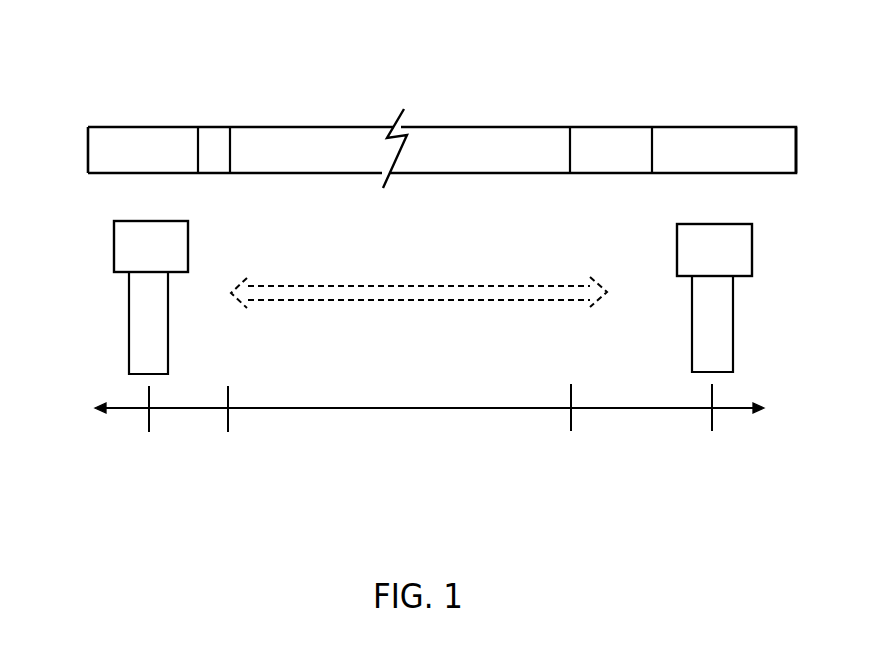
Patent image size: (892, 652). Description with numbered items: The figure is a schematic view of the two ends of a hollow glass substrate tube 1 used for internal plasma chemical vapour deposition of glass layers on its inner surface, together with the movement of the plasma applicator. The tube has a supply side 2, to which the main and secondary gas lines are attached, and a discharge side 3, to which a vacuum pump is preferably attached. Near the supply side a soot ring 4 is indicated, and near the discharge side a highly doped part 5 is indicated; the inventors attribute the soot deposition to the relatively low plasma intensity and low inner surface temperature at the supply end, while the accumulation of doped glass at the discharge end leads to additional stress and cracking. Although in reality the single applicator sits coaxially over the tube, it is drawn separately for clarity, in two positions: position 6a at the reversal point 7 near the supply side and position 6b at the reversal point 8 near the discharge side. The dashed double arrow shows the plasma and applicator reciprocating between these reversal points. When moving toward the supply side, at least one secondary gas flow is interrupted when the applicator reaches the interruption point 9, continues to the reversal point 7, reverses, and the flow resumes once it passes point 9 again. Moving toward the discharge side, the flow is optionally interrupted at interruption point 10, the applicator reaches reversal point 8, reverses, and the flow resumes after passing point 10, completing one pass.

The hollow glass substrate tube 1 is at (358, 119).
The supply side 2 is at (78, 154).
The discharge side 3 is at (806, 152).
The soot ring 4 is at (216, 112).
The highly doped part 5 is at (616, 112).
The applicator position at reversal point near supply side 6a is at (151, 297).
The applicator position at reversal point near discharge side 6b is at (714, 298).
The reversal point near supply side 7 is at (149, 423).
The reversal point near discharge side 8 is at (712, 421).
The interruption point near supply side 9 is at (228, 423).
The interruption point near discharge side 10 is at (574, 421).